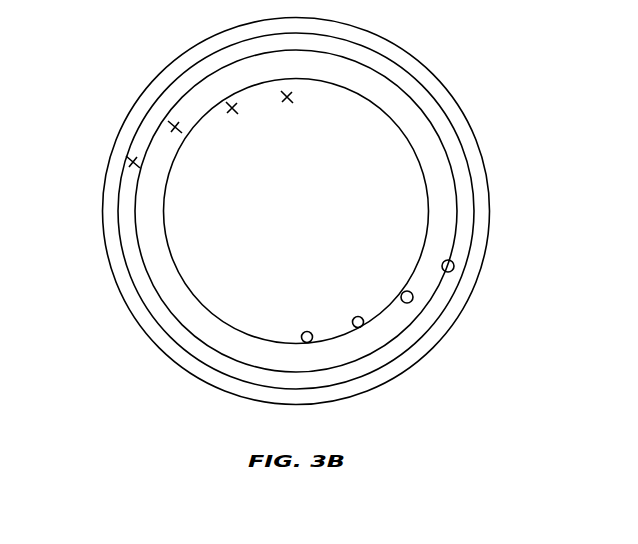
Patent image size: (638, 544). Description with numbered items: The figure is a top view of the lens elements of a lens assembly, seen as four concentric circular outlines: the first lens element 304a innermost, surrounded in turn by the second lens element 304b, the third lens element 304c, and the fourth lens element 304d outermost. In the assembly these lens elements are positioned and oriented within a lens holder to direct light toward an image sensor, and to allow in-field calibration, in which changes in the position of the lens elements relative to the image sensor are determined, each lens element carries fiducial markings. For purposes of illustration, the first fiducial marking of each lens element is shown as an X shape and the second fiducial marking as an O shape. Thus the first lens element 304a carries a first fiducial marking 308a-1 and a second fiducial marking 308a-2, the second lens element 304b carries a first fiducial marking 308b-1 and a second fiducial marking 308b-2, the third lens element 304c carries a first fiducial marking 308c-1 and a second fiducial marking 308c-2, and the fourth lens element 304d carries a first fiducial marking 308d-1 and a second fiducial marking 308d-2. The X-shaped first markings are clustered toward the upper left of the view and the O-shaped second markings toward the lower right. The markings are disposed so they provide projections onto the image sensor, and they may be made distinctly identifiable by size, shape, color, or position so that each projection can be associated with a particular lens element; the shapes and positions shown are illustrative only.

The first lens element 304a is at (430, 205).
The second lens element 304b is at (453, 167).
The third lens element 304c is at (460, 132).
The fourth lens element 304d is at (457, 95).
The first fiducial marking 308a-1 is at (286, 104).
The first fiducial marking 308b-1 is at (232, 115).
The first fiducial marking 308c-1 is at (169, 128).
The first fiducial marking 308d-1 is at (127, 162).
The second fiducial marking 308a-2 is at (308, 331).
The second fiducial marking 308b-2 is at (357, 316).
The second fiducial marking 308c-2 is at (413, 298).
The second fiducial marking 308d-2 is at (454, 266).